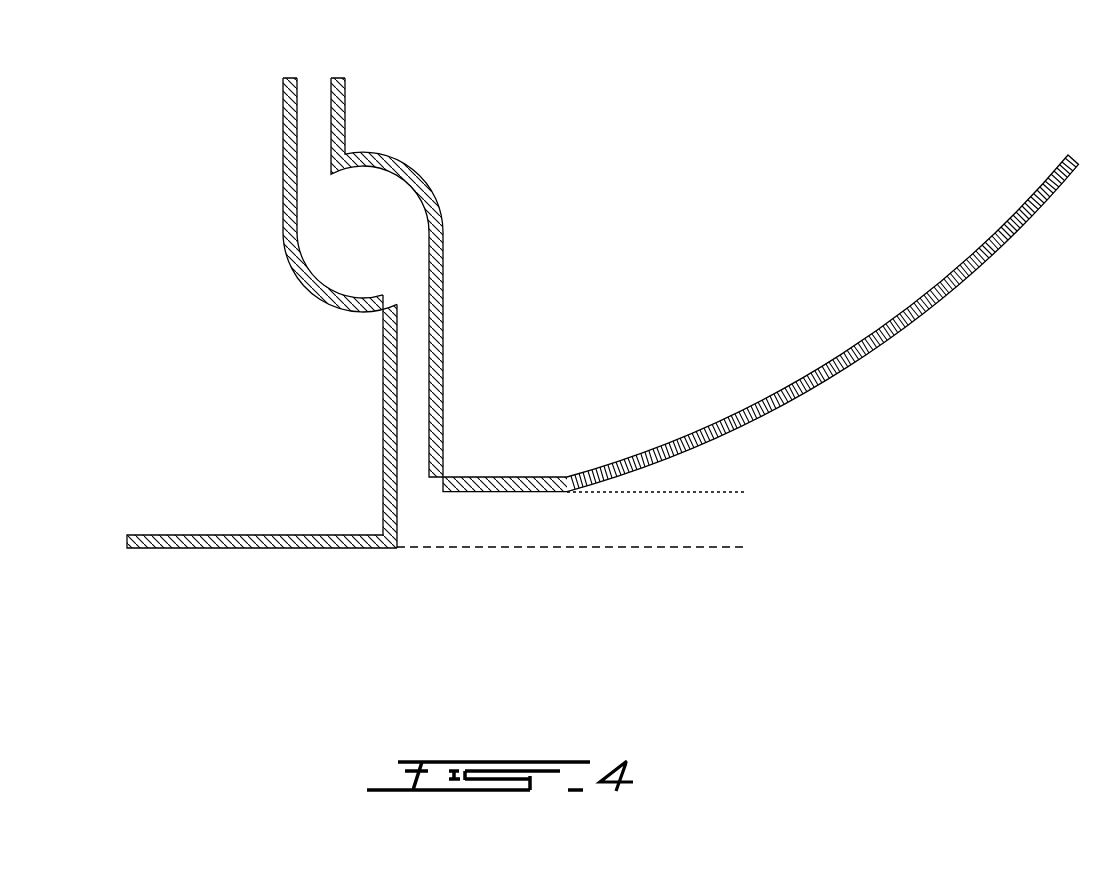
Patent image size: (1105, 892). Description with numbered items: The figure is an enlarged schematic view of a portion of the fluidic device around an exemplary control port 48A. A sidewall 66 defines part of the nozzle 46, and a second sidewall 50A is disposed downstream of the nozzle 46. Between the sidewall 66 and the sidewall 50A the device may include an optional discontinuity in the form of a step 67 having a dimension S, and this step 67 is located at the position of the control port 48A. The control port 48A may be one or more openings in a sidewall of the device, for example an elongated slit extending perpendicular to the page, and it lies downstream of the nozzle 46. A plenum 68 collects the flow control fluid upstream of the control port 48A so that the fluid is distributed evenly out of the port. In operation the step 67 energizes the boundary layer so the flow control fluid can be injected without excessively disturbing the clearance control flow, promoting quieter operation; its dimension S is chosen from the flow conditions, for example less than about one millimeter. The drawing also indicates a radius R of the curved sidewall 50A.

The nozzle 46 is at (183, 672).
The control port 48A is at (413, 493).
The sidewall 50A is at (755, 403).
The sidewall 66 is at (168, 535).
The step 67 is at (448, 569).
The plenum 68 is at (372, 240).
The radius R is at (832, 342).
The dimension S is at (732, 445).